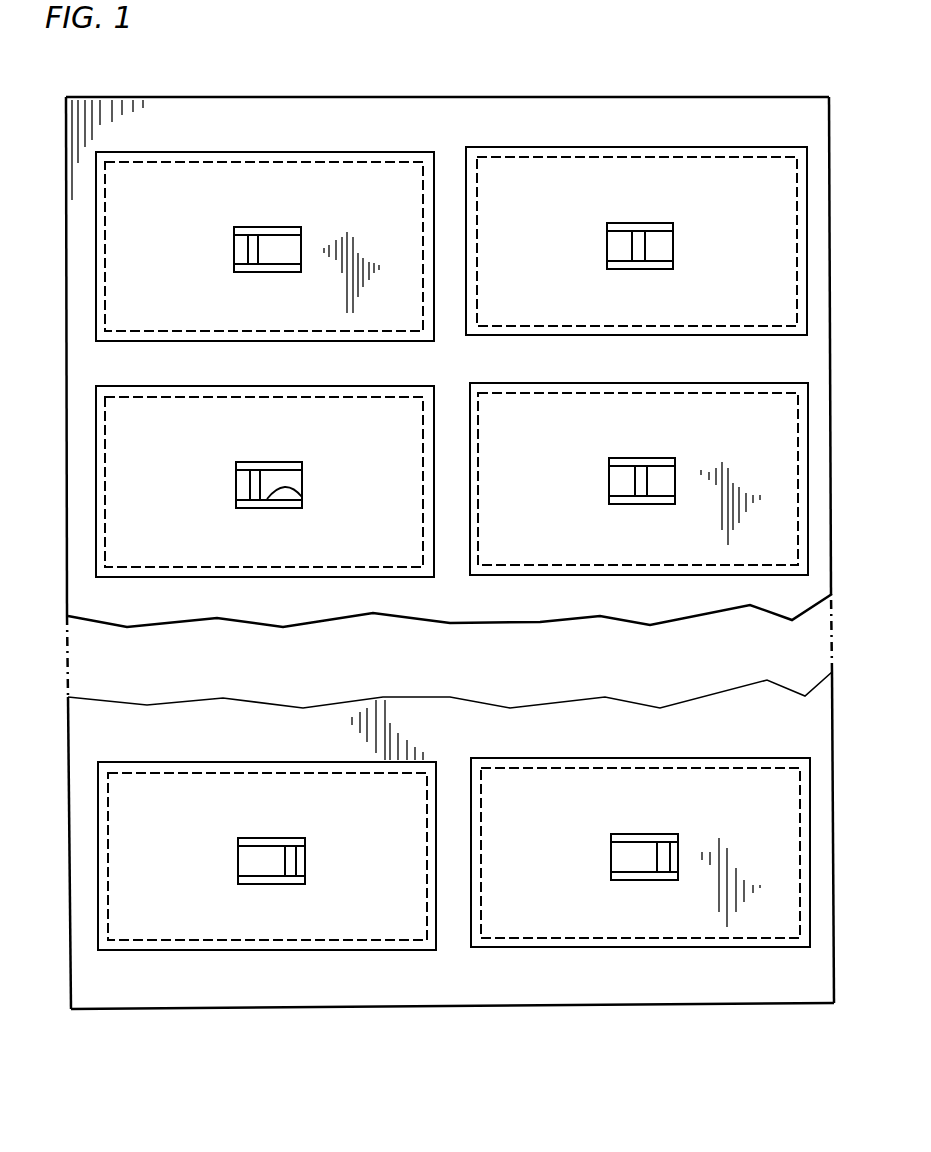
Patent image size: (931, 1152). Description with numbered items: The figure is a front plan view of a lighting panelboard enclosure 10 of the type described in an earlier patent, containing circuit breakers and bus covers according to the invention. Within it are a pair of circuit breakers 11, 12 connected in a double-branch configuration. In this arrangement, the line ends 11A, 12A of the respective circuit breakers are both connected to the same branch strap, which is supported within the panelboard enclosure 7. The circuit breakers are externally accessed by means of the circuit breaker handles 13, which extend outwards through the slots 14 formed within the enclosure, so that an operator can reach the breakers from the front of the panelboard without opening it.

The panelboard enclosure 7 is at (586, 1007).
The lighting panelboard enclosure 10 is at (789, 1071).
The circuit breaker 11 is at (103, 211).
The line end 11A is at (425, 173).
The circuit breaker 12 is at (795, 192).
The line end 12A is at (475, 177).
The circuit breaker handle 13 is at (254, 479).
The slot 14 is at (290, 490).